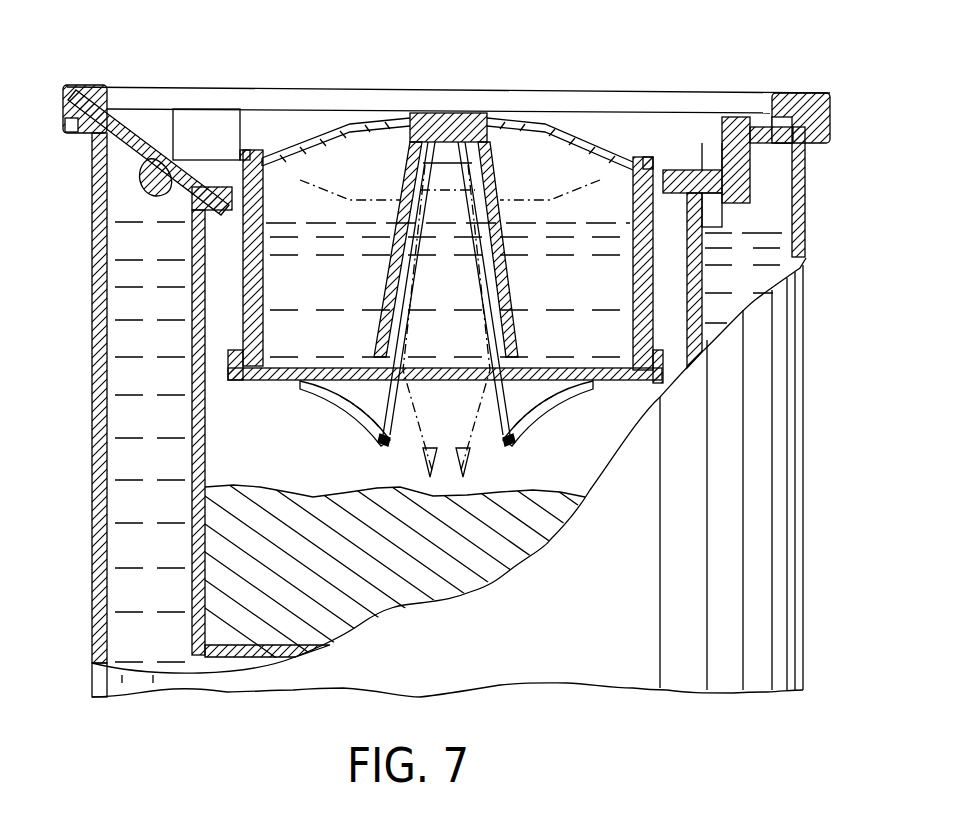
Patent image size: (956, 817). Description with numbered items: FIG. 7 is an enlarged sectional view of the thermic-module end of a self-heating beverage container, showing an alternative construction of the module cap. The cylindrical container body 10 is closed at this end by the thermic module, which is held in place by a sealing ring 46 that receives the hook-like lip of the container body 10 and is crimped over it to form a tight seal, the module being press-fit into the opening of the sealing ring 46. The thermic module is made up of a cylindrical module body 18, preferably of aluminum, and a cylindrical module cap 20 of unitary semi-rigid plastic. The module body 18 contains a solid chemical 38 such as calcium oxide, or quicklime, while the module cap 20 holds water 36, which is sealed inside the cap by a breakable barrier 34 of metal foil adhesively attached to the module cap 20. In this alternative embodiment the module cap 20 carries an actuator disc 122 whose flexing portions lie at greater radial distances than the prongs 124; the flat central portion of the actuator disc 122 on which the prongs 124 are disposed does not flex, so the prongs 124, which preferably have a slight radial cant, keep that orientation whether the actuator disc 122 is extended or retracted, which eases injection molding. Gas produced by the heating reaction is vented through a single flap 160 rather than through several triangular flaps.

The container body 10 is at (92, 328).
The module body 18 is at (197, 377).
The module cap 20 is at (533, 213).
The breakable barrier 34 is at (340, 392).
The water 36 is at (593, 343).
The solid chemical 38 is at (281, 489).
The sealing ring 46 is at (88, 82).
The actuator disc 122 is at (343, 120).
The prongs 124 is at (387, 312).
The flap 160 is at (238, 155).